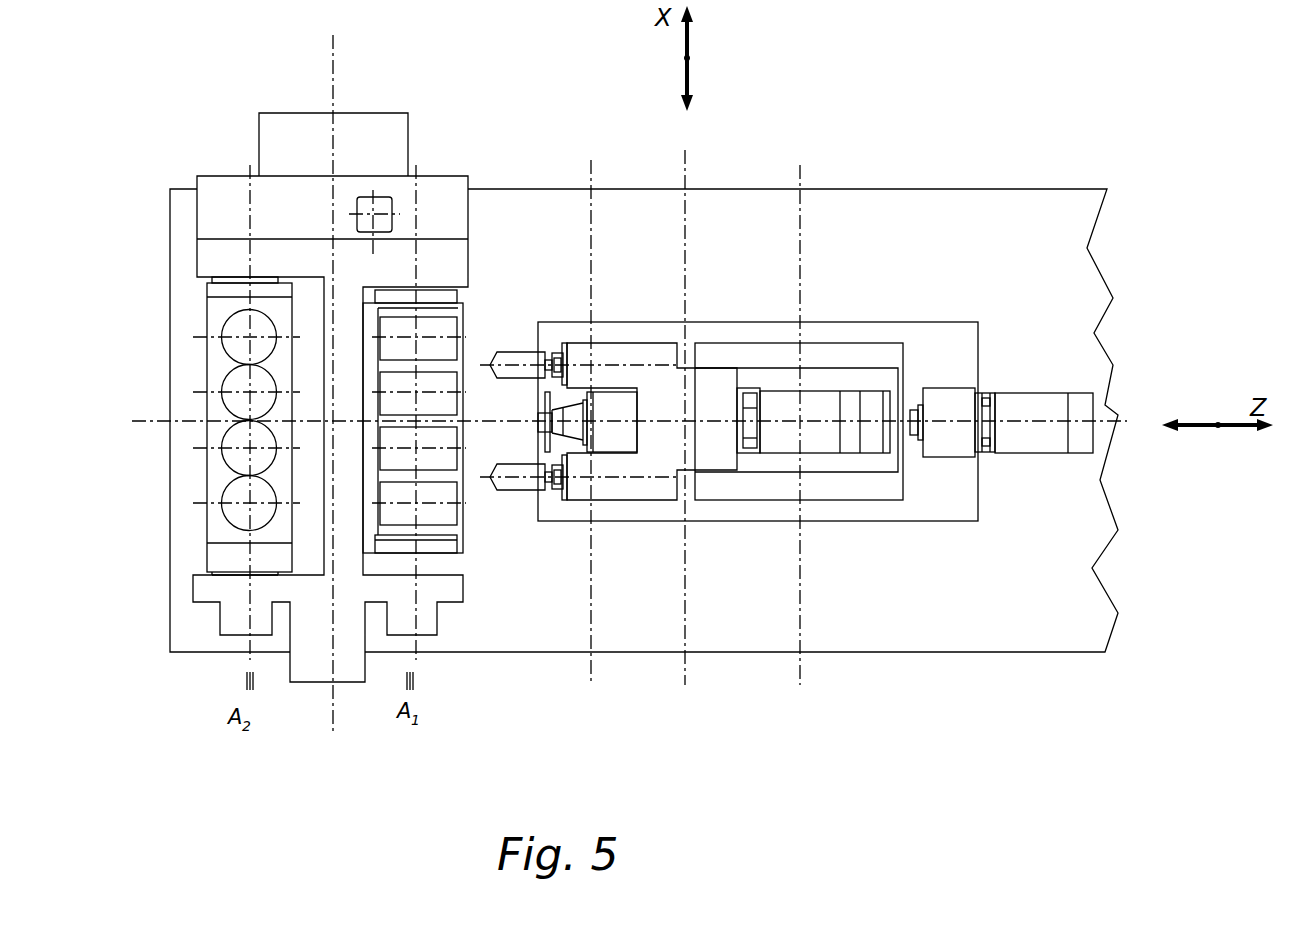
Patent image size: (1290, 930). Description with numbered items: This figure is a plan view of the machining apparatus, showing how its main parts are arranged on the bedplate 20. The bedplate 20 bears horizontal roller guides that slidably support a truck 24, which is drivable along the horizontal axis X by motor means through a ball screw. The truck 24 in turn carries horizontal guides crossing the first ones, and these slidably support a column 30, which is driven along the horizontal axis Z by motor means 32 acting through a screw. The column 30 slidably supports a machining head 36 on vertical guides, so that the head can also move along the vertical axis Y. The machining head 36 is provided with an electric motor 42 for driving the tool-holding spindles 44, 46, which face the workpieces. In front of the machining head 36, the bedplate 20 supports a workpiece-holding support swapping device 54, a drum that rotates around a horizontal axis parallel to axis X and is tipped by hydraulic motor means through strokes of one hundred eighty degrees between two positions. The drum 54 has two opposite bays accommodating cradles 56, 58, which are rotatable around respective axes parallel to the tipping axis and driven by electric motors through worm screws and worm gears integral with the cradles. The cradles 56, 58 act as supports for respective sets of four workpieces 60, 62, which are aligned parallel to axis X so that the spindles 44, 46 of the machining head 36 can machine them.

The bedplate 20 is at (1055, 623).
The truck 24 is at (948, 510).
The column 30 is at (832, 493).
The motor means 32 is at (1038, 410).
The machining head 36 is at (643, 350).
The electric motor 42 is at (823, 405).
The tool-holding spindle 44 is at (548, 355).
The tool-holding spindle 46 is at (580, 447).
The workpiece-holding support swapping device 54 is at (382, 587).
The cradle 56 is at (393, 530).
The cradle 58 is at (215, 313).
The workpieces 60 is at (237, 493).
The workpieces 62 is at (440, 385).